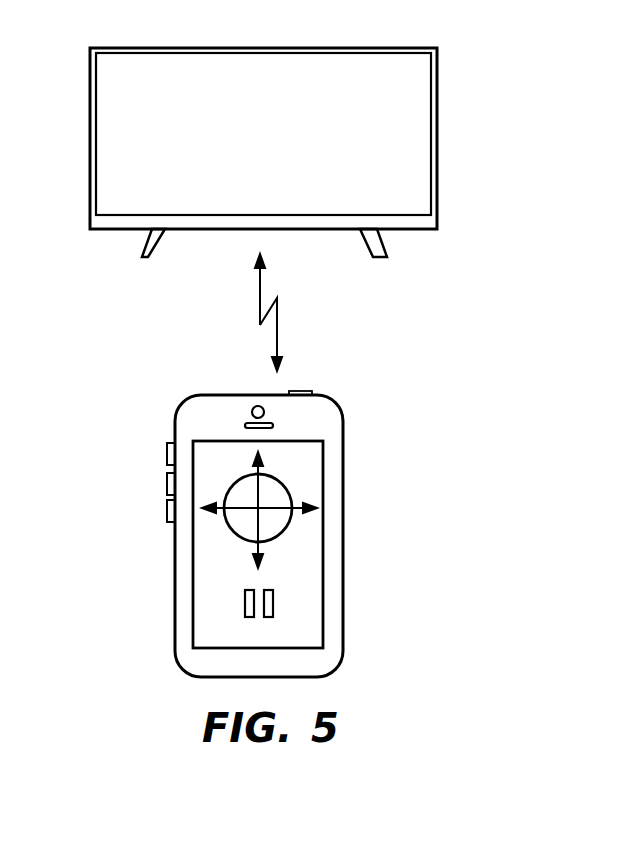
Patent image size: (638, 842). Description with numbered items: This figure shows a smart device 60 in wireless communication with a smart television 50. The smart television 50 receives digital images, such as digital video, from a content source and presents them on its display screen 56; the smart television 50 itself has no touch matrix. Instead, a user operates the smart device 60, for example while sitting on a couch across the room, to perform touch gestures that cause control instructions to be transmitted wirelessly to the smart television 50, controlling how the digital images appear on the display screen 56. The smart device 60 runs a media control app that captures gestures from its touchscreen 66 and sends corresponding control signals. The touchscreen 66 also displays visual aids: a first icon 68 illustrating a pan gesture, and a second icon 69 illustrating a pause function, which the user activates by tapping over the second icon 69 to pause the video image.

The smart television 50 is at (437, 72).
The display screen 56 is at (431, 123).
The smart device 60 is at (343, 429).
The touchscreen 66 is at (323, 468).
The first icon 68 is at (276, 540).
The second icon 69 is at (273, 611).